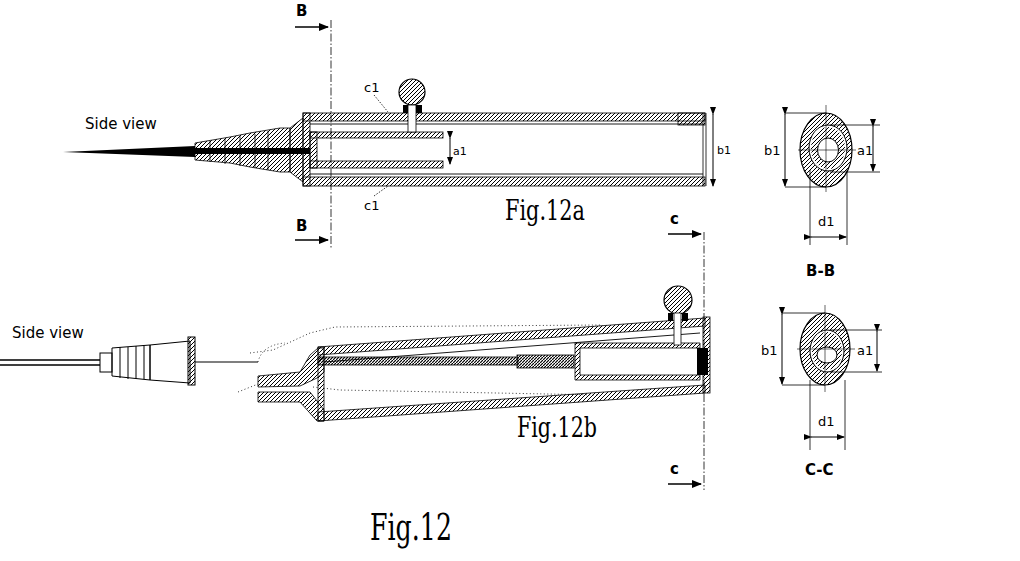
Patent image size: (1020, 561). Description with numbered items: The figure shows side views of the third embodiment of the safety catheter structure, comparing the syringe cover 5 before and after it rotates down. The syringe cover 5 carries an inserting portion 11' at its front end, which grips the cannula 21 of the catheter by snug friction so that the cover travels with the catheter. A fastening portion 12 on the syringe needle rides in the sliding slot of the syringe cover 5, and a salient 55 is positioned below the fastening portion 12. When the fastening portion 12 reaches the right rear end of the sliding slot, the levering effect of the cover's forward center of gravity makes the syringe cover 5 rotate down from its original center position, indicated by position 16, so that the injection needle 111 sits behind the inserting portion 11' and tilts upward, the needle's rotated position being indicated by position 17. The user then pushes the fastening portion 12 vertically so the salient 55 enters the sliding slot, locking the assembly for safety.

In FIG. 12A, the syringe cover 5 is at (580, 108).
In FIG. 12A, the fastening portion 12 is at (418, 80).
In FIG. 12B, the fastening portion 12 is at (684, 288).
In FIG. 12A, the salient 55 is at (422, 110).
In FIG. 12B, the salient 55 is at (670, 319).
In FIG. 12A, the cannula 21 is at (258, 130).
In FIG. 12B, the inserting portion 11' is at (226, 353).
In FIG. 12B, the original position of syringe cover 16 is at (312, 331).
In FIG. 12B, the rotated-down position of syringe needle 17 is at (348, 346).
In FIG. 12B, the injection needle 111 is at (445, 355).